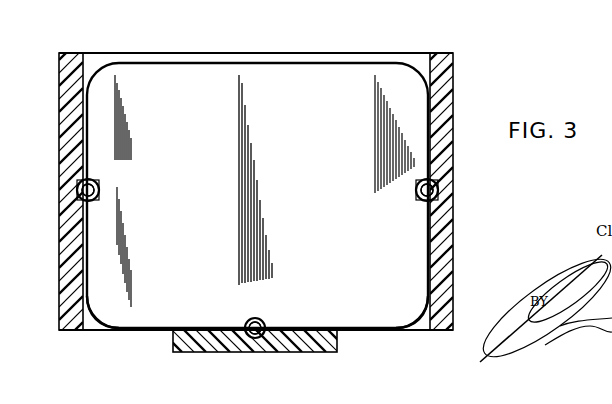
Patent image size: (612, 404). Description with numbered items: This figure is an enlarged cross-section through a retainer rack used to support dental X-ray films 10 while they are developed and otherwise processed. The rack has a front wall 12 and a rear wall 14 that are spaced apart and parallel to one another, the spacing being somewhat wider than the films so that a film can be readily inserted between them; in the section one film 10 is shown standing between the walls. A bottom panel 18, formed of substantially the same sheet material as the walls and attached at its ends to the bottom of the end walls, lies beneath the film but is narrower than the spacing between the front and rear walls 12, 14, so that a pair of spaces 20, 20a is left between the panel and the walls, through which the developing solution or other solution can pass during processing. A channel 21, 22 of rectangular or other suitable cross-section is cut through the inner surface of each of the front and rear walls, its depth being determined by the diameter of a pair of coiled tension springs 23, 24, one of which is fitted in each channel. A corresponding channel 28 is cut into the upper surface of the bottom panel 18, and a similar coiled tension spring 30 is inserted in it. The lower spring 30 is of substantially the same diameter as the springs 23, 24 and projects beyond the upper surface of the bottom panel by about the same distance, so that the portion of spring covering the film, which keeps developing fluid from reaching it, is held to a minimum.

The dental X-ray film 10 is at (338, 67).
The front wall 12 is at (59, 105).
The rear wall 14 is at (453, 108).
The bottom panel 18 is at (335, 338).
The space 20 is at (98, 322).
The space 20a is at (420, 320).
The channel 21 is at (77, 193).
The channel 22 is at (440, 208).
The coiled tension spring 23 is at (99, 190).
The coiled tension spring 24 is at (416, 191).
The channel 28 is at (248, 338).
The coiled tension spring 30 is at (262, 320).